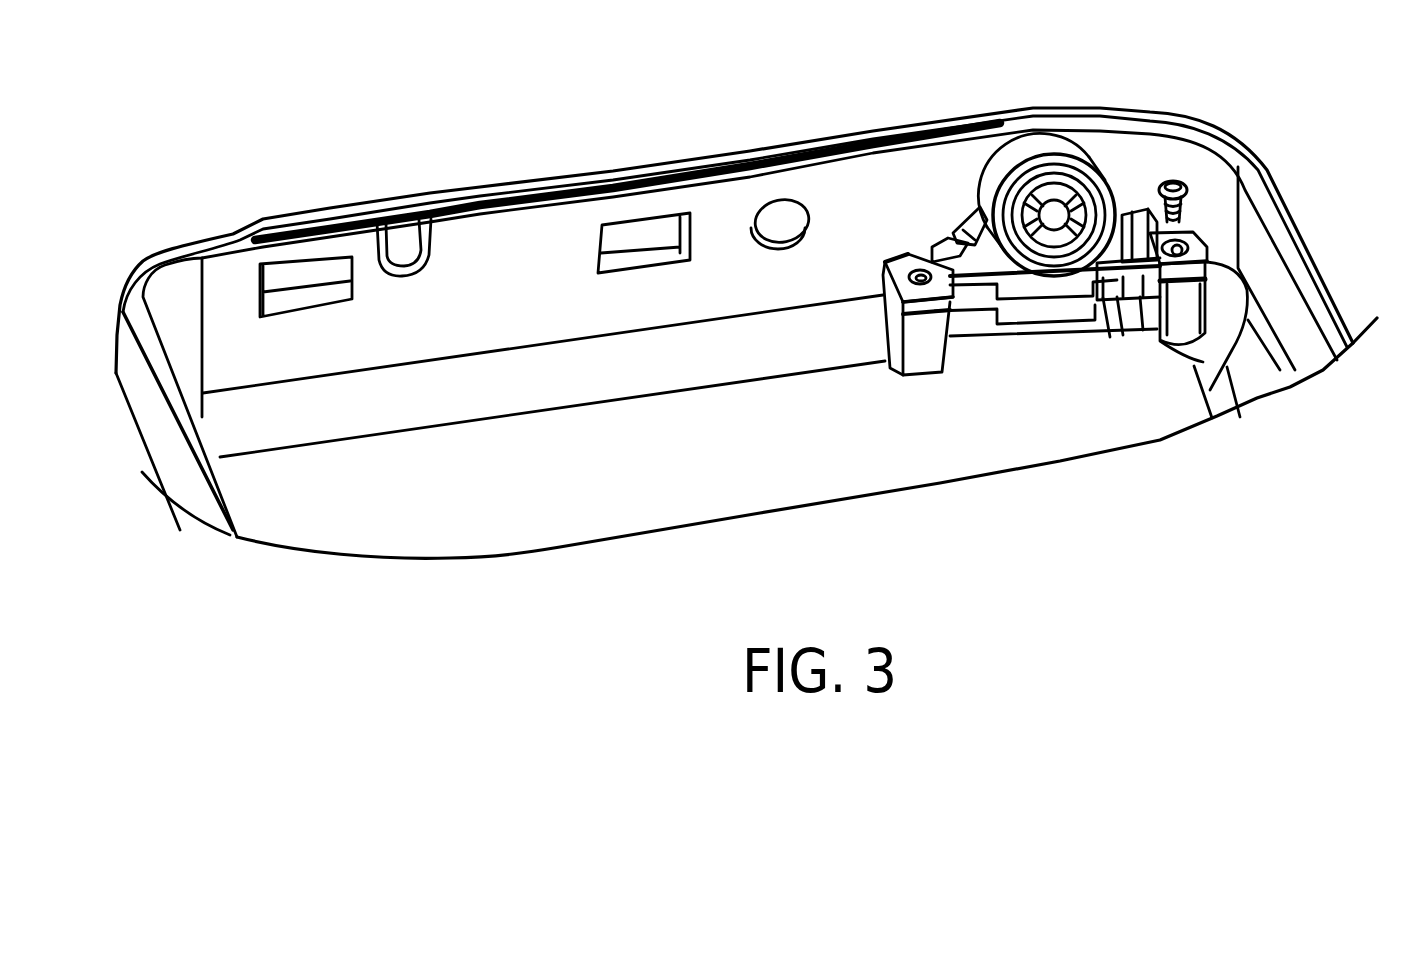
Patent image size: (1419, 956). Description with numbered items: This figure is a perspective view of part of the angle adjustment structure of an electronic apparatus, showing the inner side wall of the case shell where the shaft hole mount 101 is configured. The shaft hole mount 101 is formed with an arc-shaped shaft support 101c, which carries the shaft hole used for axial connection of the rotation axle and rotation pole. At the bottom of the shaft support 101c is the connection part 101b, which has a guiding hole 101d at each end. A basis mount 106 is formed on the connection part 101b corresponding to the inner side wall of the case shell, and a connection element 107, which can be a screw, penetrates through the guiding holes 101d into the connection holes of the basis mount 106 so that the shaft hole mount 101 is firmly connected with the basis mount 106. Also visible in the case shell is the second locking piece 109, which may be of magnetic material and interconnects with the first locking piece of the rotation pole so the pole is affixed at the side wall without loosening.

The shaft hole mount 101 is at (962, 213).
The connection part 101b is at (903, 258).
The arc-shaped shaft support 101c is at (1118, 150).
The guiding hole 101d is at (1210, 247).
The basis mount 106 is at (920, 332).
The connection element 107 is at (1193, 207).
The second locking piece 109 is at (310, 293).